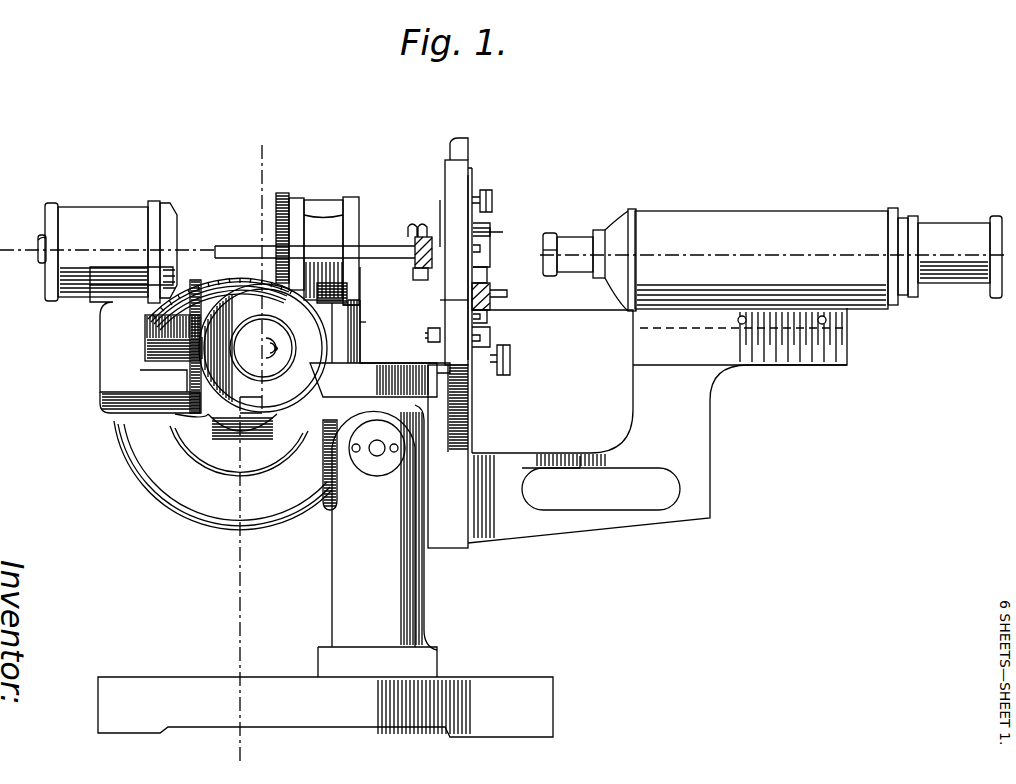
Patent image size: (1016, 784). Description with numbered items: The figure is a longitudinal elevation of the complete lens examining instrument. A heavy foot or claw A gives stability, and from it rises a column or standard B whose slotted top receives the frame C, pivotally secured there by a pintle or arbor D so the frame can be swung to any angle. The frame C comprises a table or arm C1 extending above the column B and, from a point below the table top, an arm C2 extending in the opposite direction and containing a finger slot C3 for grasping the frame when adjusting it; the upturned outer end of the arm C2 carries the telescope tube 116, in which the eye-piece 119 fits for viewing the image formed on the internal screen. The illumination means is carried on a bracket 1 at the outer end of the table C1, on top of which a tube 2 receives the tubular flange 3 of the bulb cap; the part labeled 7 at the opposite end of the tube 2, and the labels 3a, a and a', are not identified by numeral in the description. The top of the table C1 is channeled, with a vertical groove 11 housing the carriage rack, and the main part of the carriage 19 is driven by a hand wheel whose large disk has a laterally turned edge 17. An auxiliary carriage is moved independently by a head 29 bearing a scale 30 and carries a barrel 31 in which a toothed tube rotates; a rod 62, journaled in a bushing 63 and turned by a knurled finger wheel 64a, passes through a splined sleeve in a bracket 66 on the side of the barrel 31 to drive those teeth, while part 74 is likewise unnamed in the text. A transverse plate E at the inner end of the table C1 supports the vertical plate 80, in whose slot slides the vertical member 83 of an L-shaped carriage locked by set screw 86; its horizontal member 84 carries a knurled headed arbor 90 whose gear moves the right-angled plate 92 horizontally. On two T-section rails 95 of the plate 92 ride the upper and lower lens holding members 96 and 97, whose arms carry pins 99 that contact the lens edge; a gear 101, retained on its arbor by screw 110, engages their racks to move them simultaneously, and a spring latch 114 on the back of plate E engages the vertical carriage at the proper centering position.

The bracket 1 is at (107, 338).
The tube 2 is at (97, 206).
The tubular flange 3 is at (232, 145).
The gear 3a is at (287, 193).
The eyepiece collar 7 is at (168, 214).
The vertical groove 11 is at (195, 281).
The edge of the disk 17 is at (148, 482).
The main part of the carriage 19 is at (165, 326).
The head 29 is at (282, 367).
The scale 30 is at (323, 376).
The barrel 31 is at (327, 206).
The rod 62 is at (240, 247).
The bushing 63 is at (440, 247).
The knurled finger wheel 64a is at (415, 252).
The bracket 66 is at (300, 236).
The bracket 74 is at (425, 281).
The vertical plate 80 is at (447, 172).
The vertical member 83 is at (473, 172).
The horizontal member 84 is at (497, 340).
The set screw 86 is at (493, 201).
The knurled headed arbor 90 is at (512, 370).
The plate 92 is at (480, 276).
The T section rails 95 is at (484, 326).
The upper lens holding and centering member 96 is at (481, 243).
The lower lens holding and centering member 97 is at (360, 324).
The pins 99 is at (500, 232).
The gear 101 is at (468, 300).
The screw 110 is at (478, 306).
The spring arm or latch 114 is at (437, 343).
The tube 116 is at (774, 222).
The eye-piece 119 is at (946, 228).
The foot or claw A is at (165, 675).
The column or standard B is at (404, 618).
The frame C is at (440, 420).
The table or arm C1 is at (185, 432).
The arm C2 is at (695, 425).
The finger slot C3 is at (630, 507).
The pintle or arbor D is at (377, 456).
The plate E is at (460, 151).
The eyepiece end a is at (27, 212).
The telescope end a' is at (542, 238).